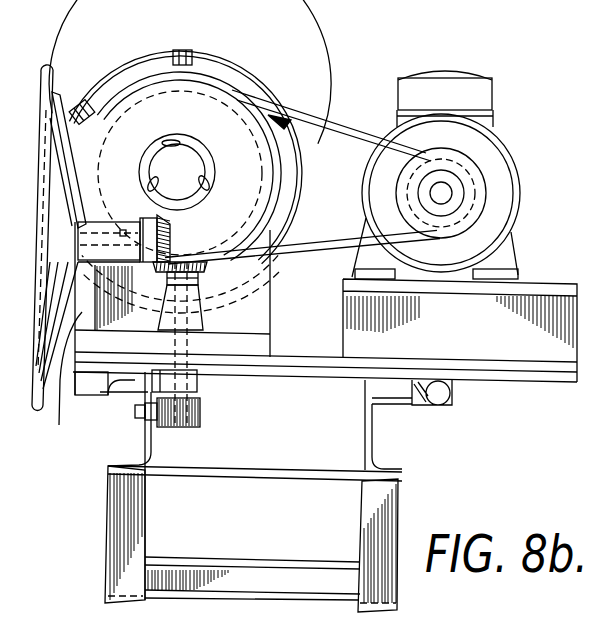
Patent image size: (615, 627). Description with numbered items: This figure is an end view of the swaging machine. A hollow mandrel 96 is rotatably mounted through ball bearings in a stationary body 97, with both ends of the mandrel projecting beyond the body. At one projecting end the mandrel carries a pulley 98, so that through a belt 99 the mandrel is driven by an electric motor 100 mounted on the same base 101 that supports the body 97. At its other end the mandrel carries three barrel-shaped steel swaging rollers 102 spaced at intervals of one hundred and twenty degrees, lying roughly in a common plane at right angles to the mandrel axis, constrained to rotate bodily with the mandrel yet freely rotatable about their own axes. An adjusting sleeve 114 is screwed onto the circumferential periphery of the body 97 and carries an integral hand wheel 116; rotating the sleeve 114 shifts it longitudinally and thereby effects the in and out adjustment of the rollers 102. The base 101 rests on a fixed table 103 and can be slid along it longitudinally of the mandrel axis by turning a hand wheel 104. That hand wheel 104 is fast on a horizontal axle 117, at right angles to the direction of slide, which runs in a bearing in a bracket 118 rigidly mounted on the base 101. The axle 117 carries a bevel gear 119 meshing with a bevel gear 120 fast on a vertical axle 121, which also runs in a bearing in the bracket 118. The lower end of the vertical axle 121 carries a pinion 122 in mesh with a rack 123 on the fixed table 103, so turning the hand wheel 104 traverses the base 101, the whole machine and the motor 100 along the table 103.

The hollow mandrel 96 is at (200, 156).
The stationary body 97 is at (268, 320).
The pulley 98 is at (191, 120).
The belt 99 is at (342, 118).
The electric motor 100 is at (518, 212).
The base 101 is at (303, 374).
The swaging rollers 102 is at (218, 180).
The fixed table 103 is at (115, 383).
The hand wheel 104 is at (60, 53).
The adjusting sleeve 114 is at (233, 82).
The hand wheel 116 is at (110, 52).
The axle 117 is at (140, 205).
The bracket 118 is at (61, 383).
The bevel gear 119 is at (178, 227).
The bevel gear 120 is at (193, 262).
The vertical axle 121 is at (197, 385).
The pinion 122 is at (201, 413).
The rack 123 is at (152, 422).